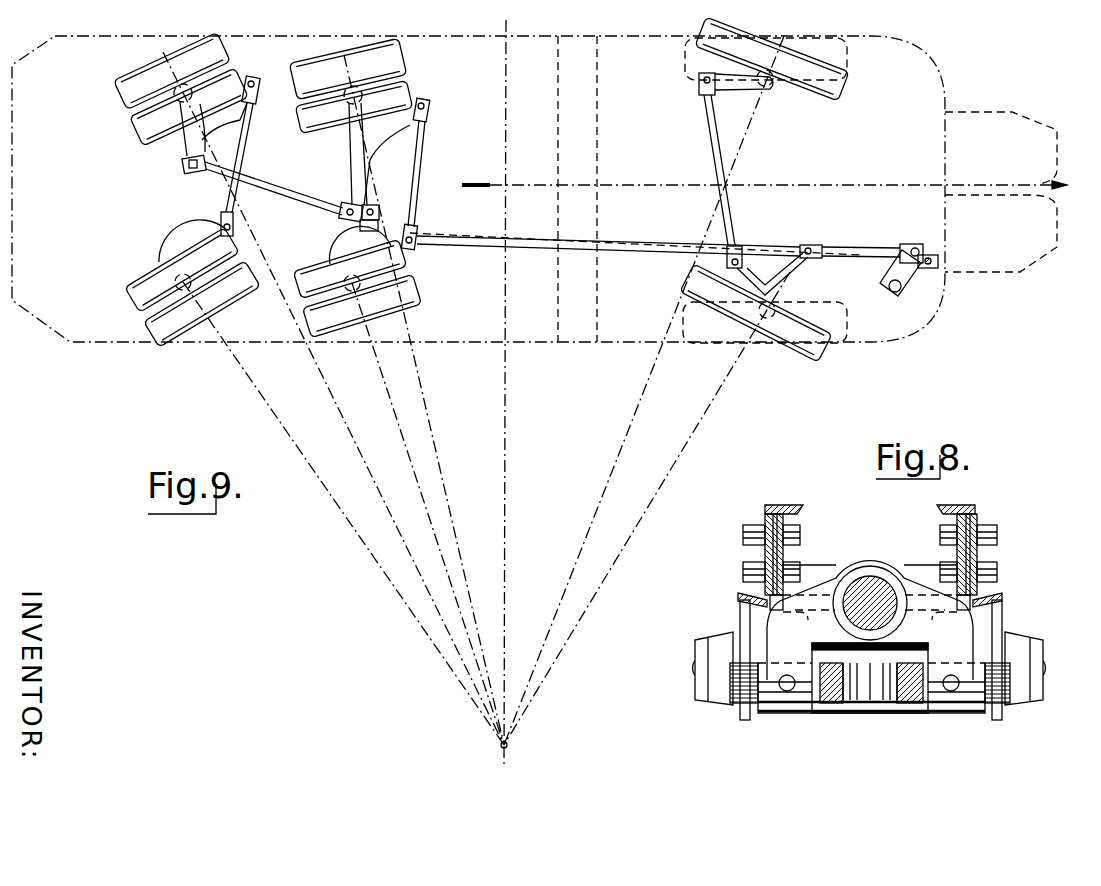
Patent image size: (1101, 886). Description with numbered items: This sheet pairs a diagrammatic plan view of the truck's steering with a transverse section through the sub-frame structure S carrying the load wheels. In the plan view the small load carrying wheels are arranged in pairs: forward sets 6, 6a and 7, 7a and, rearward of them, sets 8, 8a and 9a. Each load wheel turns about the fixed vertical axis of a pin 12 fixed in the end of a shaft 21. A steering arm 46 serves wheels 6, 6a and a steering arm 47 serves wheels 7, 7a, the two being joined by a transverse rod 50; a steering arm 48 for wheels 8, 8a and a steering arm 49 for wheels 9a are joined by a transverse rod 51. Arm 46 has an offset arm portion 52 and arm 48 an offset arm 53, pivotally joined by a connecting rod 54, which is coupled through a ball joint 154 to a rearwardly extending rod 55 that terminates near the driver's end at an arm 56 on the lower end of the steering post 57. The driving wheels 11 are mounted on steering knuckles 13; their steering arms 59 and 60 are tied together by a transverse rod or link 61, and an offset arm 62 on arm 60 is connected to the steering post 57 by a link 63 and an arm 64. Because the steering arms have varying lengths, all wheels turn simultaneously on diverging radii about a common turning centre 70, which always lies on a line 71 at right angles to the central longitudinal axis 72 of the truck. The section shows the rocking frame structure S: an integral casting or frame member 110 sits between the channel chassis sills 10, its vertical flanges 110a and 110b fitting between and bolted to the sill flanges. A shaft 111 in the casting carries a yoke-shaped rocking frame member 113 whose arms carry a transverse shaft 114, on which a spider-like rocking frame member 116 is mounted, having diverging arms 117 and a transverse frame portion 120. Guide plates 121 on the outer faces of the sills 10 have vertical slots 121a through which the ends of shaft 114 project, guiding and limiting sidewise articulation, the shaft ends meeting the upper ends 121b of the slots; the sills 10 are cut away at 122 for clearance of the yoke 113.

In FIG. 9, the load carrying wheel 6 is at (124, 100).
In FIG. 9, the load carrying wheel 6a is at (158, 126).
In FIG. 9, the load carrying wheel 7 is at (158, 318).
In FIG. 9, the load carrying wheel 7a is at (138, 283).
In FIG. 9, the load carrying wheel 8 is at (400, 61).
In FIG. 9, the load carrying wheel 8a is at (405, 96).
In FIG. 9, the load carrying wheel 9a is at (410, 260).
In FIG. 9, the driving wheel 11 is at (838, 97).
In FIG. 9, the pin 12 is at (190, 75).
In FIG. 9, the steering knuckle 13 is at (782, 40).
In FIG. 9, the steering arm 46 is at (237, 118).
In FIG. 9, the steering arm 47 is at (192, 222).
In FIG. 9, the steering arm 48 is at (428, 120).
In FIG. 9, the steering arm 49 is at (350, 243).
In FIG. 9, the transverse rod 50 is at (213, 168).
In FIG. 9, the transverse rod 51 is at (423, 165).
In FIG. 9, the offset arm portion 52 is at (186, 145).
In FIG. 9, the offset arm 53 is at (350, 156).
In FIG. 9, the connecting rod 54 is at (280, 190).
In FIG. 9, the rearwardly extending rod 55 is at (654, 250).
In FIG. 9, the arm 56 is at (936, 266).
In FIG. 9, the steering post 57 is at (892, 293).
In FIG. 9, the steering arm 59 is at (752, 88).
In FIG. 9, the steering arm 60 is at (755, 265).
In FIG. 9, the transverse rod 61 is at (715, 129).
In FIG. 9, the offset arm 62 is at (800, 262).
In FIG. 9, the link 63 is at (877, 246).
In FIG. 9, the arm 64 is at (915, 270).
In FIG. 9, the turning centre 70 is at (476, 396).
In FIG. 9, the locus line 71 is at (507, 480).
In FIG. 9, the central longitudinal axis 72 is at (688, 185).
In FIG. 9, the ball joint 154 is at (371, 206).
In FIG. 8, the chassis sill 10 is at (793, 503).
In FIG. 8, the fixed shaft 21 is at (692, 668).
In FIG. 8, the frame member 110 is at (826, 555).
In FIG. 8, the vertical flange 110a is at (790, 553).
In FIG. 8, the vertical flange 110b is at (950, 548).
In FIG. 8, the shaft 111 is at (868, 585).
In FIG. 8, the rocking frame member 113 is at (928, 625).
In FIG. 8, the transverse shaft 114 is at (735, 680).
In FIG. 8, the rocking frame member 116 is at (905, 715).
In FIG. 8, the rearward diverging branches 117 is at (832, 714).
In FIG. 8, the transverse frame portion 120 is at (735, 635).
In FIG. 8, the guide plate 121 is at (762, 520).
In FIG. 8, the vertical slot 121a is at (742, 716).
In FIG. 8, the upper end of guide slot 121b is at (738, 597).
In FIG. 8, the cut away portion 122 is at (745, 574).
In FIG. 8, the sub-frame structure S is at (862, 716).